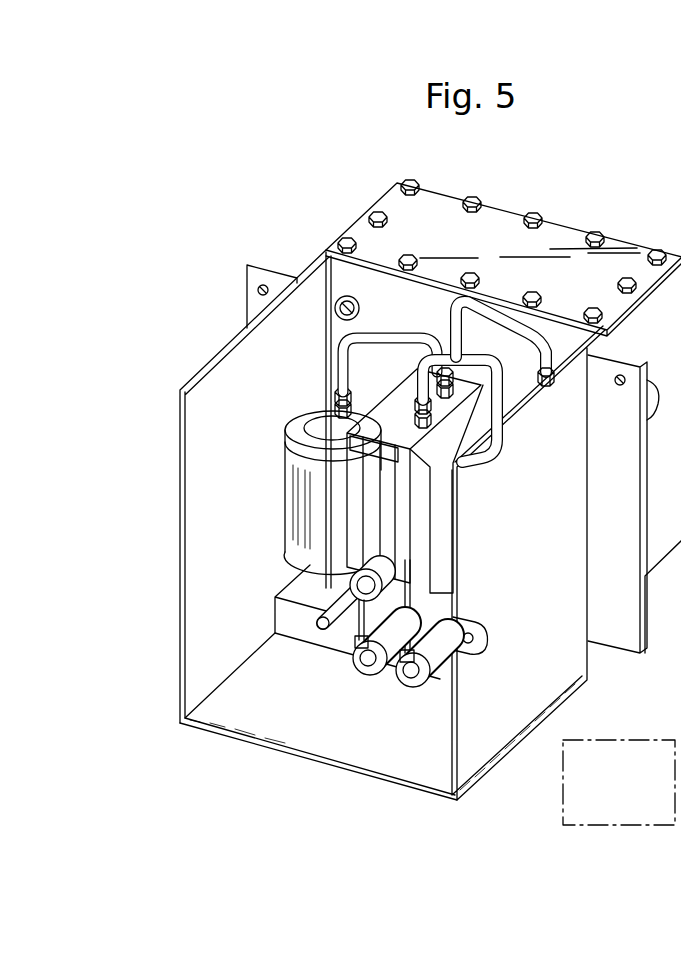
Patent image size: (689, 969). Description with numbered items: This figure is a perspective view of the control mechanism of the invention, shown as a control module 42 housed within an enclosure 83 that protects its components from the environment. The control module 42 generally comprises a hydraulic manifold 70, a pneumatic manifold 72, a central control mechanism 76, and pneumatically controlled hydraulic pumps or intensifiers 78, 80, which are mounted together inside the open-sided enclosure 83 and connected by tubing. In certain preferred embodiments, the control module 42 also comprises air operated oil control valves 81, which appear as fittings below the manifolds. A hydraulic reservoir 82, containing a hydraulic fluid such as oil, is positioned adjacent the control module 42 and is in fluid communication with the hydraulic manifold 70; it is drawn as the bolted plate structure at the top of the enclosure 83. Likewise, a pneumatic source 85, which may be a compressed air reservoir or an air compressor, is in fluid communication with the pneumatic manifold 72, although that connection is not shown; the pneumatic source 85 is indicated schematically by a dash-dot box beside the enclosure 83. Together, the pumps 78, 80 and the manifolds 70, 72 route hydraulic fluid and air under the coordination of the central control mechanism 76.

The control module 42 is at (538, 170).
The hydraulic reservoir 82 is at (398, 203).
The enclosure 83 is at (232, 356).
The pneumatically controlled hydraulic pump 78 is at (302, 403).
The pneumatic manifold 72 is at (460, 423).
The pneumatically controlled hydraulic pump 80 is at (460, 463).
The hydraulic manifold 70 is at (323, 640).
The central control mechanism 76 is at (327, 622).
The air operated oil control valves 81 is at (368, 675).
The pneumatic source 85 is at (631, 797).